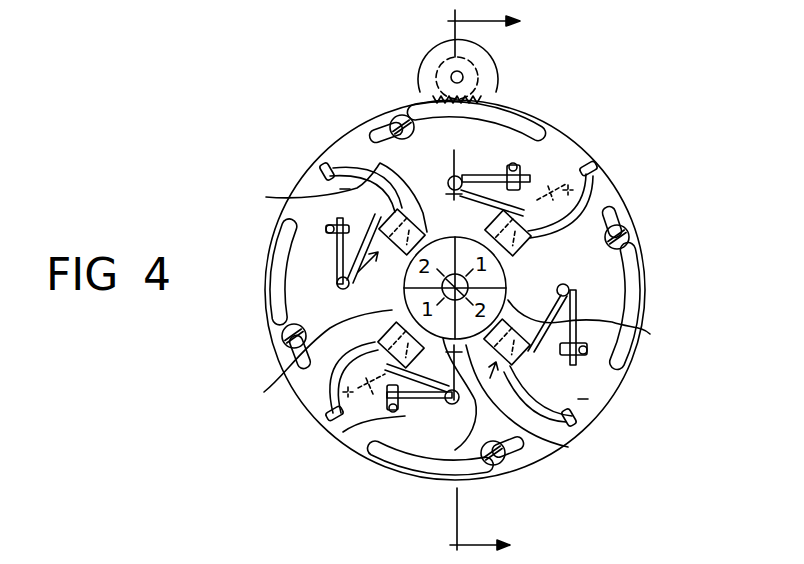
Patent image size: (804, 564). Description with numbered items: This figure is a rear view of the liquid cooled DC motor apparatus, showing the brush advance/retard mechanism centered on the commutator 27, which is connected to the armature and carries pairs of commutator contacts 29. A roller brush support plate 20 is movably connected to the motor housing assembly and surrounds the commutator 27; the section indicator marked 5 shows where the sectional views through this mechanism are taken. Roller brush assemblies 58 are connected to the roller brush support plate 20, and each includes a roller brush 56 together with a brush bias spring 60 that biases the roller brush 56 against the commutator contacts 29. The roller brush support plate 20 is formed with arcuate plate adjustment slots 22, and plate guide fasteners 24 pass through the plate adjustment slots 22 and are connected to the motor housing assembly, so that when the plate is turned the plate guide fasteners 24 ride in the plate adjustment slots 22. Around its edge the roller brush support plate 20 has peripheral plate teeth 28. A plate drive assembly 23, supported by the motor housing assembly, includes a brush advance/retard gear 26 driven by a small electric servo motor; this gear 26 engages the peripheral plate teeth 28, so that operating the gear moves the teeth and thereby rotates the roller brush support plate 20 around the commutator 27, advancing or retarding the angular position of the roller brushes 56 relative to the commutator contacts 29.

The section line 5- 5 is at (470, 281).
The roller brush support plate 20 is at (602, 375).
The plate adjustment slots 22 is at (622, 305).
The plate drive assembly 23 is at (410, 60).
The plate guide fasteners 24 is at (508, 462).
The brush advance/retard gear 26 is at (467, 74).
The commutator 27 is at (440, 216).
The peripheral plate teeth 28 is at (443, 98).
The commutator contacts 29 is at (450, 432).
The roller brushes 56 is at (330, 168).
The roller brush assemblies 58 is at (285, 325).
The brush bias springs 60 is at (315, 198).